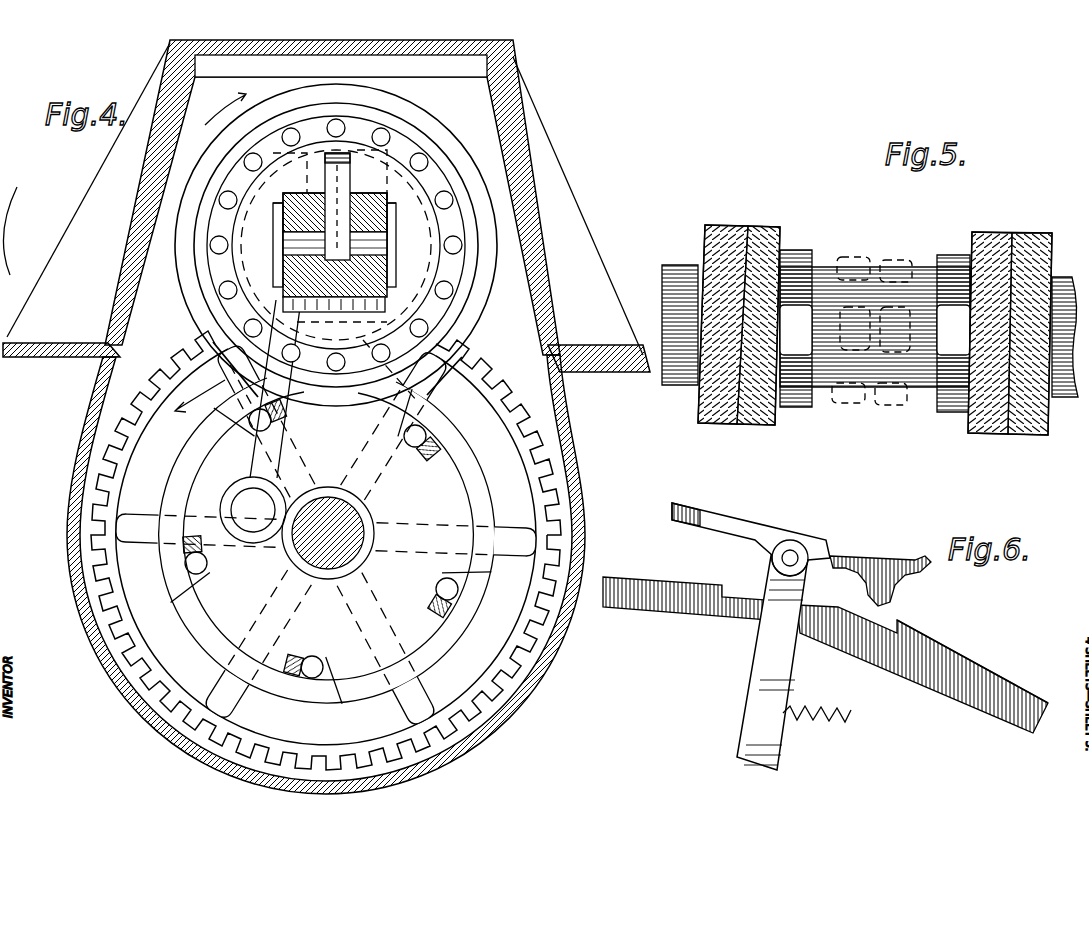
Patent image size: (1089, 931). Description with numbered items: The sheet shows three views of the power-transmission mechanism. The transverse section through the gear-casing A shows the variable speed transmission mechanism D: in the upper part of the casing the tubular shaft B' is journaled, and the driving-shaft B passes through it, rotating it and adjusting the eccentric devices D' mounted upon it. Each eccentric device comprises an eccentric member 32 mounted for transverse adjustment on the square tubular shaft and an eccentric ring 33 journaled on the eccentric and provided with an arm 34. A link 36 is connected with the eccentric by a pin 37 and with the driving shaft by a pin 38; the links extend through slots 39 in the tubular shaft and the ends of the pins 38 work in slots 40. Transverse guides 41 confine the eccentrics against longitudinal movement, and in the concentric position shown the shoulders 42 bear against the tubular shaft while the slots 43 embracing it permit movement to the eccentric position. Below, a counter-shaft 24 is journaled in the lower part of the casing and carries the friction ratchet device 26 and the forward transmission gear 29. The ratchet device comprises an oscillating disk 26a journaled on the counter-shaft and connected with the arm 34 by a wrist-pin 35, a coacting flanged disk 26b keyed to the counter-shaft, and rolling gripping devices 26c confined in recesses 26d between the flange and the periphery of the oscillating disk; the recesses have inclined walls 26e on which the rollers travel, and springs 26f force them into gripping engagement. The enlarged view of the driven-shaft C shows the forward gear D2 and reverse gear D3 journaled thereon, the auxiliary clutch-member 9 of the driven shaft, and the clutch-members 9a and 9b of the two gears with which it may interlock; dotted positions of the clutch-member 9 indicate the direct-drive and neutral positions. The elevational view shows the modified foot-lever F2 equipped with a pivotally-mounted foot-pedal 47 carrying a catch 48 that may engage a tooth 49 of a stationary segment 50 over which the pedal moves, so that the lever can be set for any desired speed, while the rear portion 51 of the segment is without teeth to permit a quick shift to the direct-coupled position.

In FIG. 4, the gear-casing A is at (323, 199).
In FIG. 4, the driving-shaft B is at (318, 245).
In FIG. 4, the tubular shaft B' is at (321, 219).
In FIG. 5, the driven-shaft C is at (665, 295).
In FIG. 4, the variable speed transmission mechanism D is at (342, 373).
In FIG. 4, the eccentric devices D' is at (336, 242).
In FIG. 5, the forward gear D2 is at (747, 219).
In FIG. 5, the reverse gear D3 is at (1010, 228).
In FIG. 6, the lever bar F2 is at (757, 660).
In FIG. 5, the auxiliary clutch-member 9 is at (850, 258).
In FIG. 5, the clutch-member of the forward gear 9a is at (787, 282).
In FIG. 5, the clutch-member of the reverse gear 9b is at (955, 258).
In FIG. 4, the counter-shaft 24 is at (362, 524).
In FIG. 4, the friction ratchet device 26 is at (345, 580).
In FIG. 4, the oscillating disk 26a is at (225, 605).
In FIG. 4, the flanged disk 26b is at (497, 526).
In FIG. 4, the rolling gripping devices 26c is at (252, 418).
In FIG. 4, the recesses 26d is at (185, 515).
In FIG. 4, the inclined walls 26e is at (440, 456).
In FIG. 4, the springs 26f is at (452, 566).
In FIG. 4, the forward transmission gear 29 is at (530, 437).
In FIG. 4, the eccentric member 32 is at (270, 212).
In FIG. 4, the eccentric ring 33 is at (190, 292).
In FIG. 4, the arm 34 is at (250, 460).
In FIG. 4, the wrist-pin 35 is at (240, 498).
In FIG. 4, the link 36 is at (380, 192).
In FIG. 4, the pin 37 is at (372, 135).
In FIG. 4, the pin 38 is at (390, 245).
In FIG. 4, the slots 39 is at (322, 193).
In FIG. 4, the slots 40 is at (283, 233).
In FIG. 4, the transverse guides 41 is at (280, 205).
In FIG. 4, the shoulders 42 is at (307, 193).
In FIG. 4, the slots 43 is at (283, 300).
In FIG. 6, the foot-pedal 47 is at (818, 540).
In FIG. 6, the catch 48 is at (880, 600).
In FIG. 6, the tooth 49 is at (810, 640).
In FIG. 6, the stationary segment 50 is at (972, 695).
In FIG. 6, the rear portion of the segment 51 is at (985, 668).